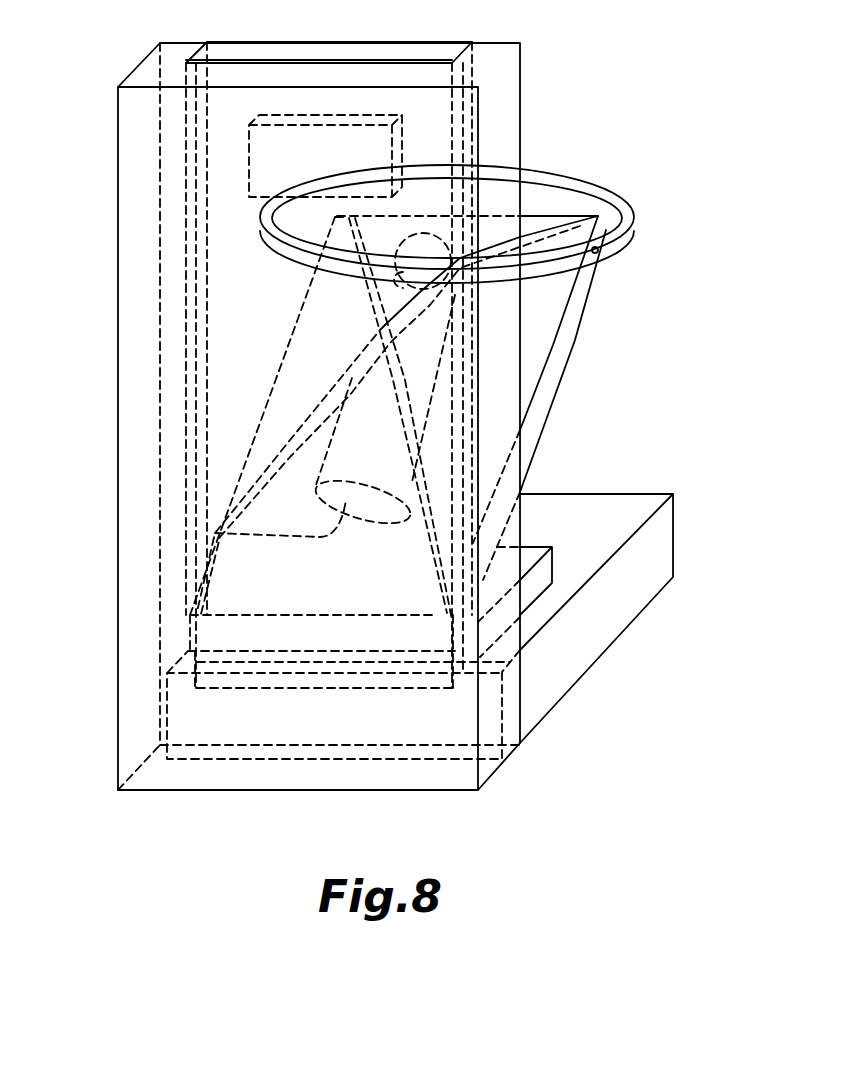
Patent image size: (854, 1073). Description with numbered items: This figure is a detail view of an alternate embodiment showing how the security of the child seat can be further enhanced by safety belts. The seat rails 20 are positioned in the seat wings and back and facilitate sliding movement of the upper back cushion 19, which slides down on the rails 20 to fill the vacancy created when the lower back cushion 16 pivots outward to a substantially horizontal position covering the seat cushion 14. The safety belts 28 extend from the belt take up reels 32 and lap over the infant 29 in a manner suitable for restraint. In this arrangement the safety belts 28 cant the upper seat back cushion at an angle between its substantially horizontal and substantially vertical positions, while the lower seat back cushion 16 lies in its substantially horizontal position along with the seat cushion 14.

The seat cushion 14 is at (655, 570).
The lower back cushion 16 is at (538, 578).
The upper back cushion 19 is at (553, 377).
The rails 20 is at (190, 430).
The safety belts 28 is at (262, 243).
The infant 29 is at (355, 498).
The belt take up reels 32 is at (293, 153).